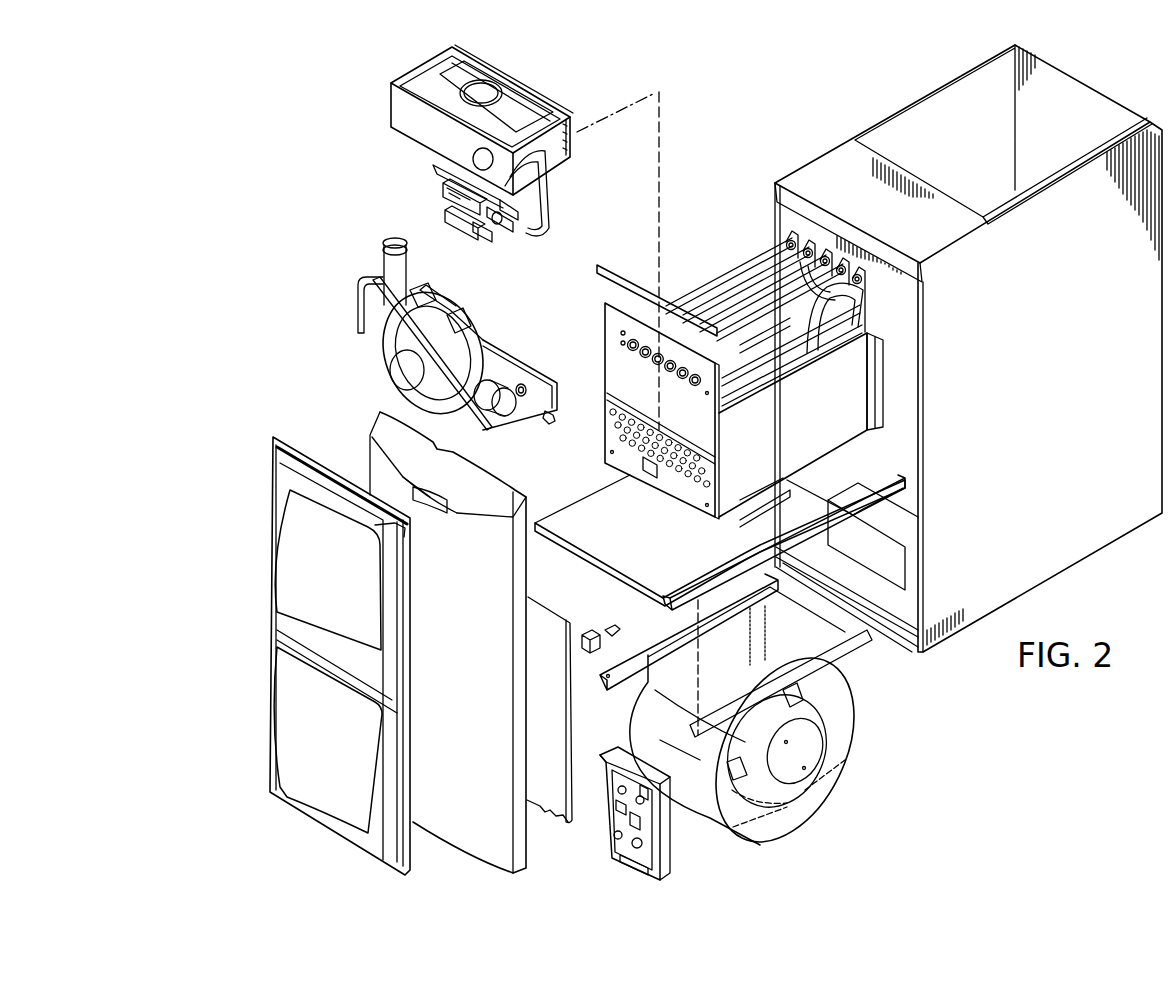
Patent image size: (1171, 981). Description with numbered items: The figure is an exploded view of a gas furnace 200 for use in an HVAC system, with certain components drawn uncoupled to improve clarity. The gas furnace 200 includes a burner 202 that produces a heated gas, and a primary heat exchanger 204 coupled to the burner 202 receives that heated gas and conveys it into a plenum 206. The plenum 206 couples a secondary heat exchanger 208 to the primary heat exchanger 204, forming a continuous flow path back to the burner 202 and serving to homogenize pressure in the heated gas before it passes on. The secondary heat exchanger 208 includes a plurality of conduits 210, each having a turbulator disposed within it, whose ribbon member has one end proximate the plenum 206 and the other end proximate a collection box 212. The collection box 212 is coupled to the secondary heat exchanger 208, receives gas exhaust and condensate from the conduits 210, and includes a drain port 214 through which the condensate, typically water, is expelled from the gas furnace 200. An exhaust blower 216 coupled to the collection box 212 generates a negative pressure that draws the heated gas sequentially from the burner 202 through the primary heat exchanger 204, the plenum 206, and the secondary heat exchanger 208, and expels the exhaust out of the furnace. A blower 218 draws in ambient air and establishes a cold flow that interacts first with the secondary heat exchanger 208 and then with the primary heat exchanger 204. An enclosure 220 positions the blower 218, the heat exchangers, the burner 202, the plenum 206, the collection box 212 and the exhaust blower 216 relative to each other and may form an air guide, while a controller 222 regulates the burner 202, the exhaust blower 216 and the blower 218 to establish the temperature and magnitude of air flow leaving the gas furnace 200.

The gas furnace 200 is at (259, 194).
The burner 202 is at (390, 103).
The primary heat exchanger 204 is at (728, 271).
The plenum 206 is at (883, 422).
The secondary heat exchanger 208 is at (857, 428).
The conduits 210 is at (600, 423).
The collection box 212 is at (540, 423).
The drain port 214 is at (558, 425).
The exhaust blower 216 is at (463, 310).
The blower 218 is at (848, 712).
The enclosure 220 is at (373, 422).
The controller 222 is at (610, 838).